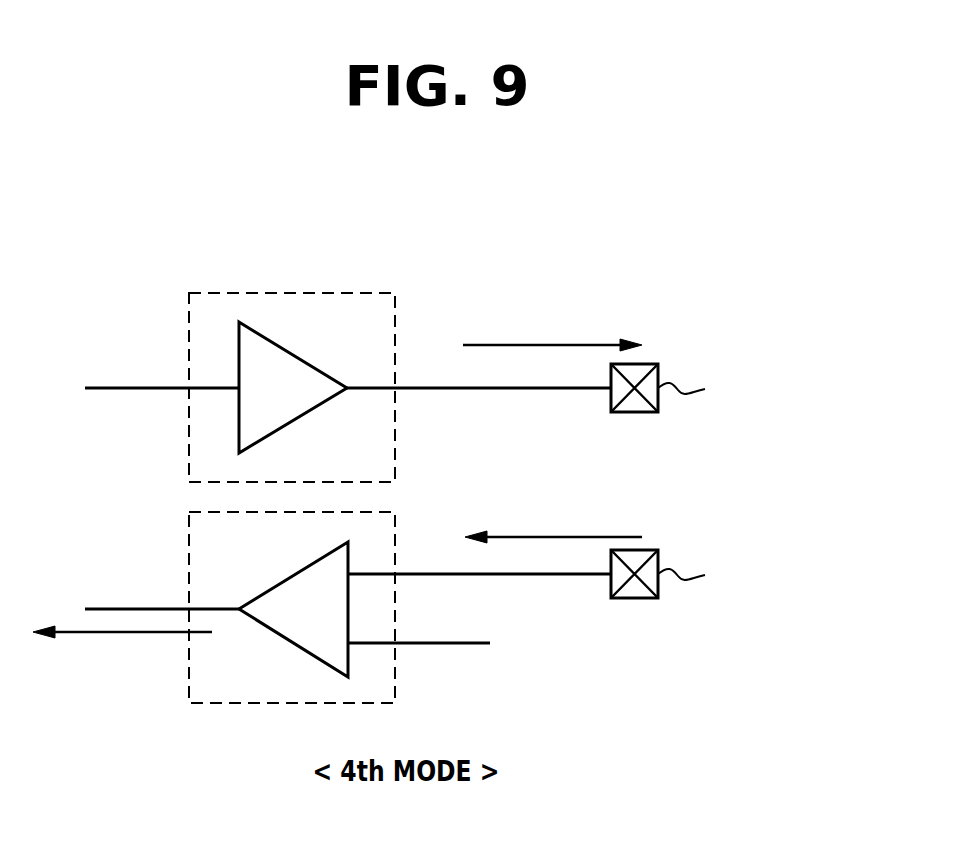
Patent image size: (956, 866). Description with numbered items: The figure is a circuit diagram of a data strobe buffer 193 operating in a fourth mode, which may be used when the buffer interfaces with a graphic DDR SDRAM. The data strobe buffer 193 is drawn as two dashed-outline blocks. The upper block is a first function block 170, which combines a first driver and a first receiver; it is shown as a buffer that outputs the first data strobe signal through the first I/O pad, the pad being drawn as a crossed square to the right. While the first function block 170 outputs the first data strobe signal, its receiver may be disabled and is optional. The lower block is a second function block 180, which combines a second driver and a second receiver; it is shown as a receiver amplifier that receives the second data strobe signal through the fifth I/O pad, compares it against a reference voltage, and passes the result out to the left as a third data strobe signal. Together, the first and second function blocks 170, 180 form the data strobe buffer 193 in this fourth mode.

The first function block 170 is at (292, 293).
The second function block 180 is at (383, 512).
The data strobe buffer 193 is at (742, 250).